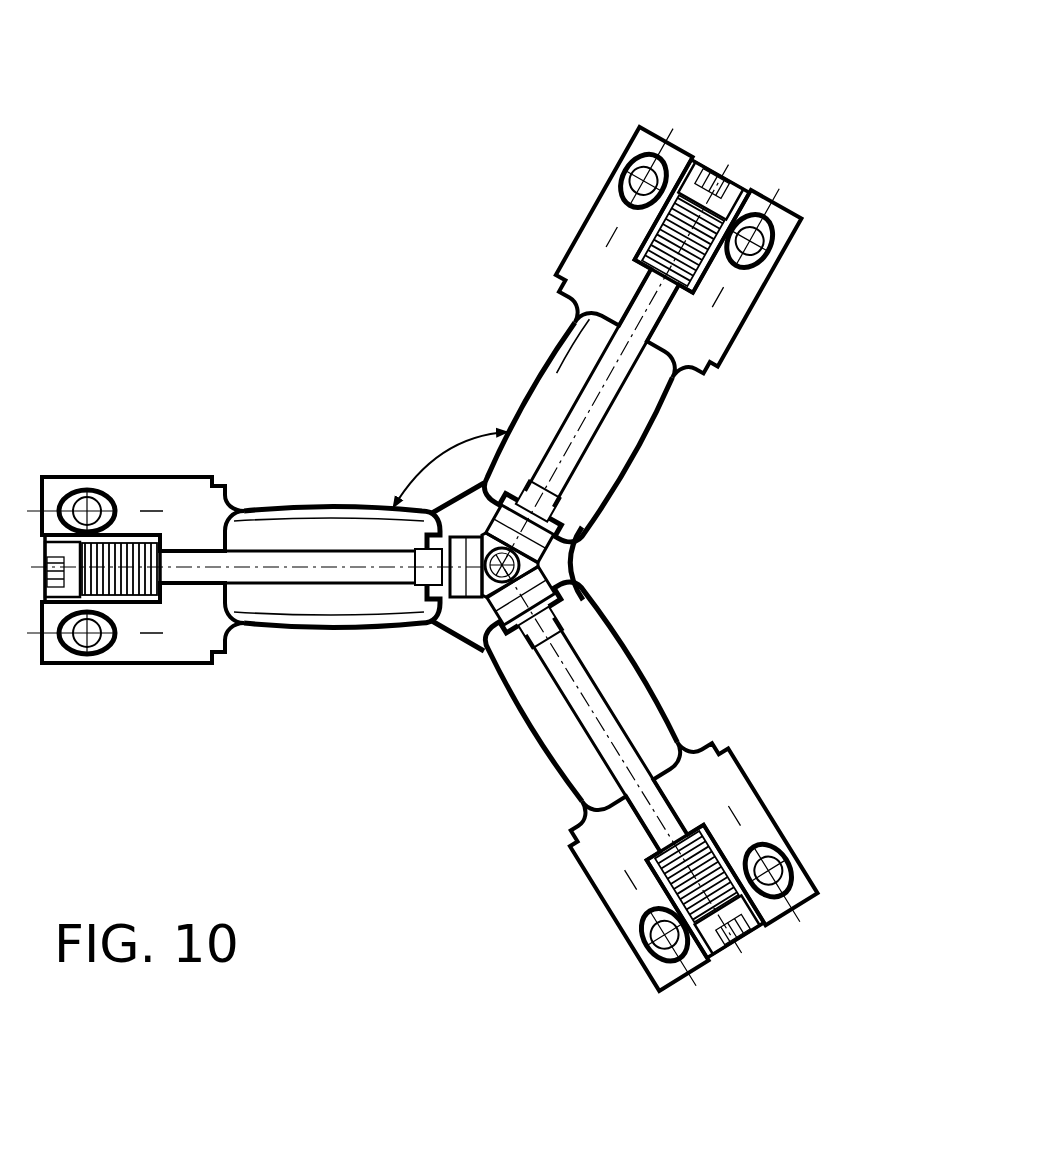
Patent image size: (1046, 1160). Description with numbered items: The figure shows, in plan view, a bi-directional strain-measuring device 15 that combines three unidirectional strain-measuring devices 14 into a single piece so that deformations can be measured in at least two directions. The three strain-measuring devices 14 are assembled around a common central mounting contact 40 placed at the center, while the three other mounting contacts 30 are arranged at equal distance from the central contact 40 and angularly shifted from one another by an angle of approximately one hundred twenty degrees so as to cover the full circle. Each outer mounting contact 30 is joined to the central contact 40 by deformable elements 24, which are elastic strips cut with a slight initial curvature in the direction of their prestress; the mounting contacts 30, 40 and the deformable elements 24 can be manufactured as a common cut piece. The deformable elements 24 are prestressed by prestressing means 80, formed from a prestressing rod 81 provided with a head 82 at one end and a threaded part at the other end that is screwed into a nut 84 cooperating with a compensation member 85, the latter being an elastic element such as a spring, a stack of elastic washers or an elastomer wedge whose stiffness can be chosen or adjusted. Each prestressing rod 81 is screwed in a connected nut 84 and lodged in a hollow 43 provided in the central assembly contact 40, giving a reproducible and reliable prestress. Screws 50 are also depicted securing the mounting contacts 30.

The bi-directional strain-measuring device 15 is at (305, 255).
The strain-measuring device 14 is at (142, 472).
The deformable element 24 is at (345, 508).
The mounting contact 30 is at (697, 333).
The central mounting contact 40 is at (492, 596).
The hollow 43 is at (547, 543).
The fastening screw 50 is at (632, 157).
The prestressing means 80 is at (705, 148).
The prestressing rod 81 is at (580, 363).
The head 82 is at (723, 172).
The nut 84 is at (520, 437).
The compensation member 85 is at (627, 243).